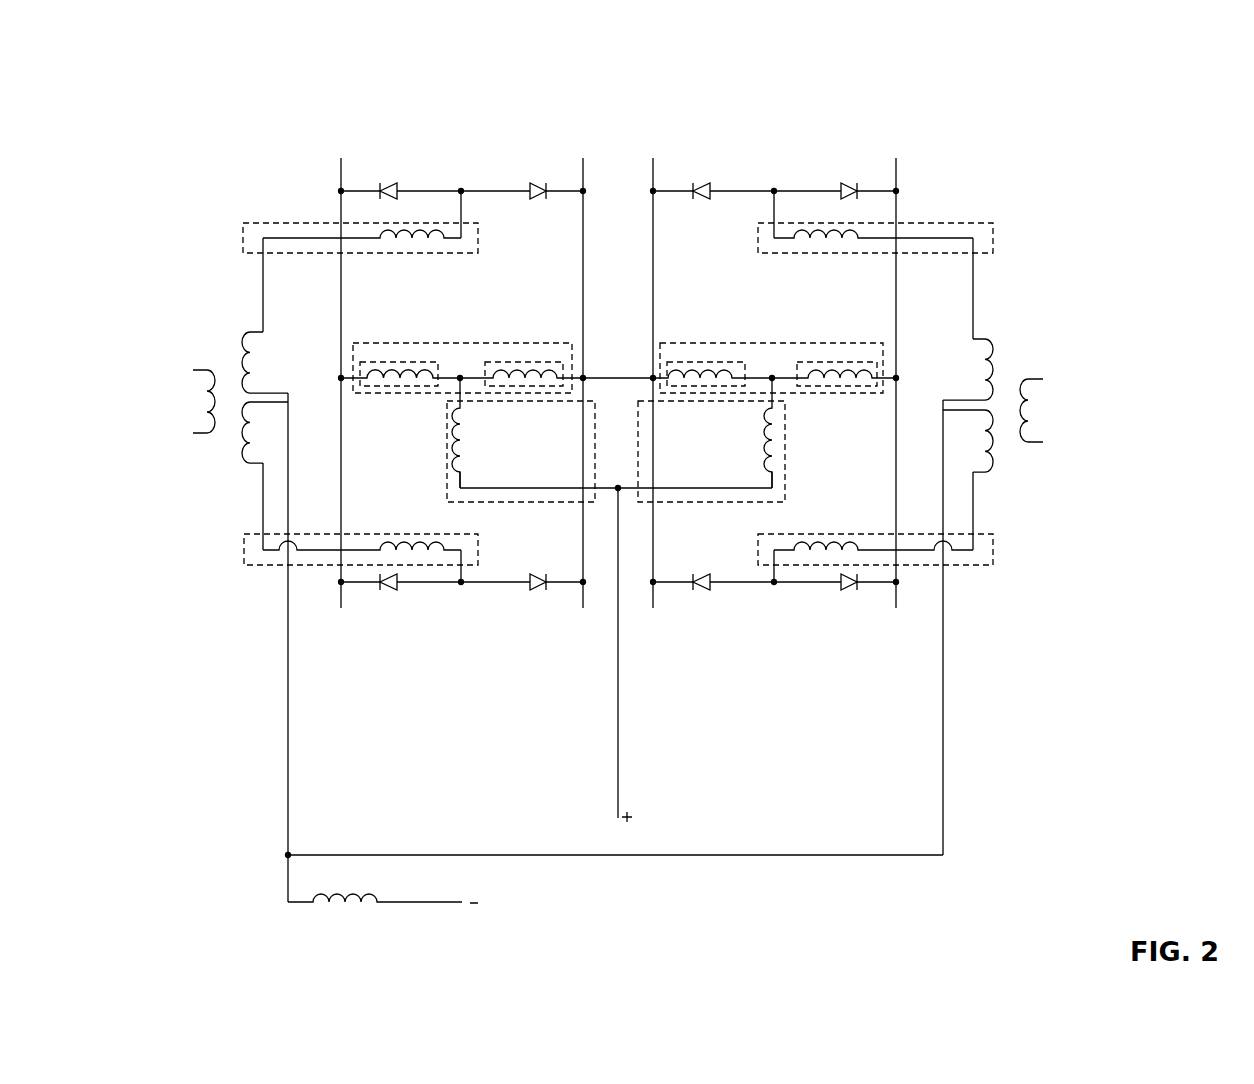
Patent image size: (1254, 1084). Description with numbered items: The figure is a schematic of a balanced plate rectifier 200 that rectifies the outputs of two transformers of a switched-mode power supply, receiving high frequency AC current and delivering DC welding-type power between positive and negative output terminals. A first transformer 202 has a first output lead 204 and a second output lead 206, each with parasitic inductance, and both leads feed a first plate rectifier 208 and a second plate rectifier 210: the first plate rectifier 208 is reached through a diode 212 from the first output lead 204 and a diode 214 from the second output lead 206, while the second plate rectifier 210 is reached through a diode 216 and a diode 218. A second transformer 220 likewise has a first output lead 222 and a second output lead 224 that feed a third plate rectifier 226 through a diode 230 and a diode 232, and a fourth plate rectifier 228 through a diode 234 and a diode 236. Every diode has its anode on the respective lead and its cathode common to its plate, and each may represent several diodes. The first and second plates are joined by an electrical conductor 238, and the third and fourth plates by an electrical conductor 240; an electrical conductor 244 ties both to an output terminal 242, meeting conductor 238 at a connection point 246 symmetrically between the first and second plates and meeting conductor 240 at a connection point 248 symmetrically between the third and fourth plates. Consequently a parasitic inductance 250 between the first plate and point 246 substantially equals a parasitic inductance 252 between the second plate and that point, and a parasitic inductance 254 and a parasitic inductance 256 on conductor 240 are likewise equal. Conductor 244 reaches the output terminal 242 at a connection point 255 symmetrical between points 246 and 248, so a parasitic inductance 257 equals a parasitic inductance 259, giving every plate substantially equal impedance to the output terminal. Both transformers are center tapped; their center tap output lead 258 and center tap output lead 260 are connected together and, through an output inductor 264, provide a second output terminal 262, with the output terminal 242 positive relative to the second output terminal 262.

The balanced plate rectifier 200 is at (216, 78).
The first transformer 202 is at (206, 358).
The first output lead 204 is at (258, 222).
The second output lead 206 is at (248, 534).
The first plate rectifier 208 is at (341, 158).
The second plate rectifier 210 is at (581, 165).
The diode 212 is at (392, 184).
The diode 214 is at (390, 588).
The diode 216 is at (534, 184).
The diode 218 is at (539, 588).
The second transformer 220 is at (1045, 357).
The first output lead 222 is at (993, 223).
The second output lead 224 is at (985, 567).
The third plate rectifier 226 is at (656, 165).
The fourth plate rectifier 228 is at (894, 165).
The diode 230 is at (703, 184).
The diode 232 is at (702, 588).
The diode 234 is at (846, 184).
The diode 236 is at (846, 588).
The electrical conductor 238 is at (423, 342).
The electrical conductor 240 is at (735, 345).
The output terminal 242 is at (618, 753).
The electrical conductor 244 is at (612, 465).
The connection point 246 is at (462, 341).
The connection point 248 is at (774, 341).
The parasitic inductance 250 is at (425, 372).
The parasitic inductance 252 is at (530, 366).
The parasitic inductance 254 is at (738, 372).
The connection point 255 is at (620, 490).
The parasitic inductance 256 is at (862, 366).
The parasitic inductance 257 is at (457, 482).
The center tap output lead 258 is at (275, 393).
The parasitic inductance 259 is at (766, 468).
The center tap output lead 260 is at (965, 398).
The second output terminal 262 is at (420, 900).
The output inductor 264 is at (368, 892).